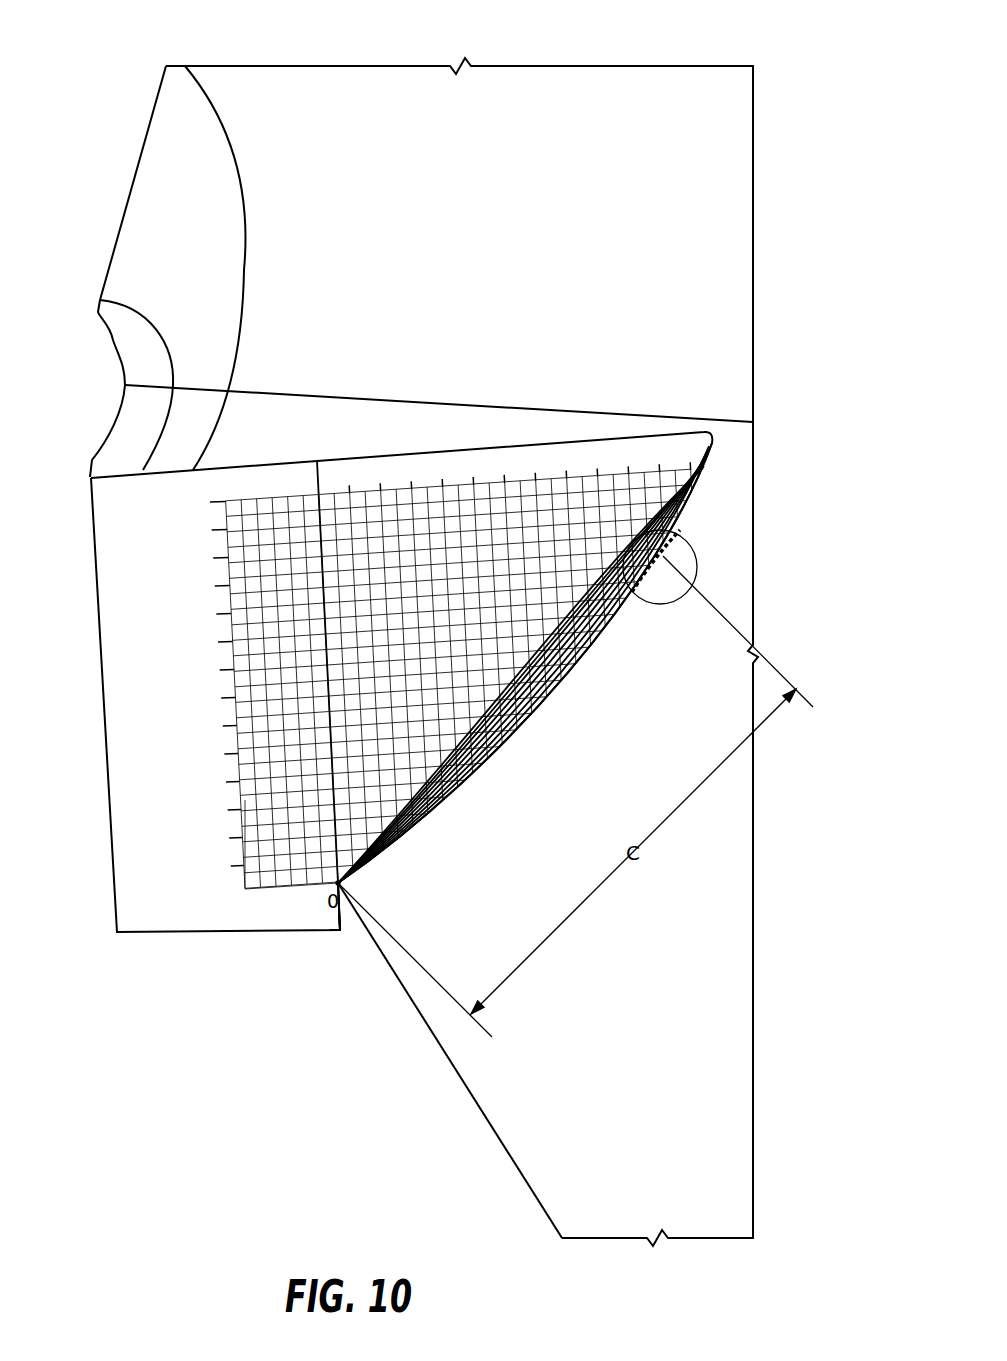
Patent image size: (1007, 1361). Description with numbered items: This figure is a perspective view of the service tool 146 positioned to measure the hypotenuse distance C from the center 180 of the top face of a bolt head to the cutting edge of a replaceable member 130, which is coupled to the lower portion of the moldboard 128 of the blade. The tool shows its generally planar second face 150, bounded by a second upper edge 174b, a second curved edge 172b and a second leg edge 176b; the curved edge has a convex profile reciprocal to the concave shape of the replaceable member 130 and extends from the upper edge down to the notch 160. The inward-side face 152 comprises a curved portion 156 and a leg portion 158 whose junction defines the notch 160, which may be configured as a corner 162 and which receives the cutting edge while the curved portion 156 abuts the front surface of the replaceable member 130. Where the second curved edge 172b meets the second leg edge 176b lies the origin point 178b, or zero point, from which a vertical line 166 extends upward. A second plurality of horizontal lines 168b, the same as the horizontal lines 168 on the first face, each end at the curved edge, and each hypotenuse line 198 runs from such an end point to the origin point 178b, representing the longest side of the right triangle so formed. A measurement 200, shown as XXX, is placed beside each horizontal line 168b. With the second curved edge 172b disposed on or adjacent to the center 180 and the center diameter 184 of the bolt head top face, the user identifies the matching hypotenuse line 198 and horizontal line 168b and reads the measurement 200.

The moldboard 128 is at (355, 110).
The replaceable member 130 is at (525, 1123).
The service tool 146 is at (153, 513).
The second face 150 is at (100, 493).
The inward-side face 152 is at (545, 717).
The curved portion 156 is at (587, 640).
The leg portion 158 is at (340, 917).
The notch 160 is at (343, 887).
The corner 162 is at (338, 883).
The vertical line 166 is at (313, 510).
The horizontal lines 168 is at (228, 490).
The second plurality of horizontal lines 168b is at (235, 582).
The second curved edge 172b is at (525, 663).
The second upper edge 174b is at (688, 432).
The second leg edge 176b is at (342, 925).
The origin point 178b is at (337, 887).
The center 180 is at (665, 560).
The center diameter 184 is at (650, 585).
The hypotenuse lines 198 is at (663, 554).
The measurement 200 is at (183, 493).